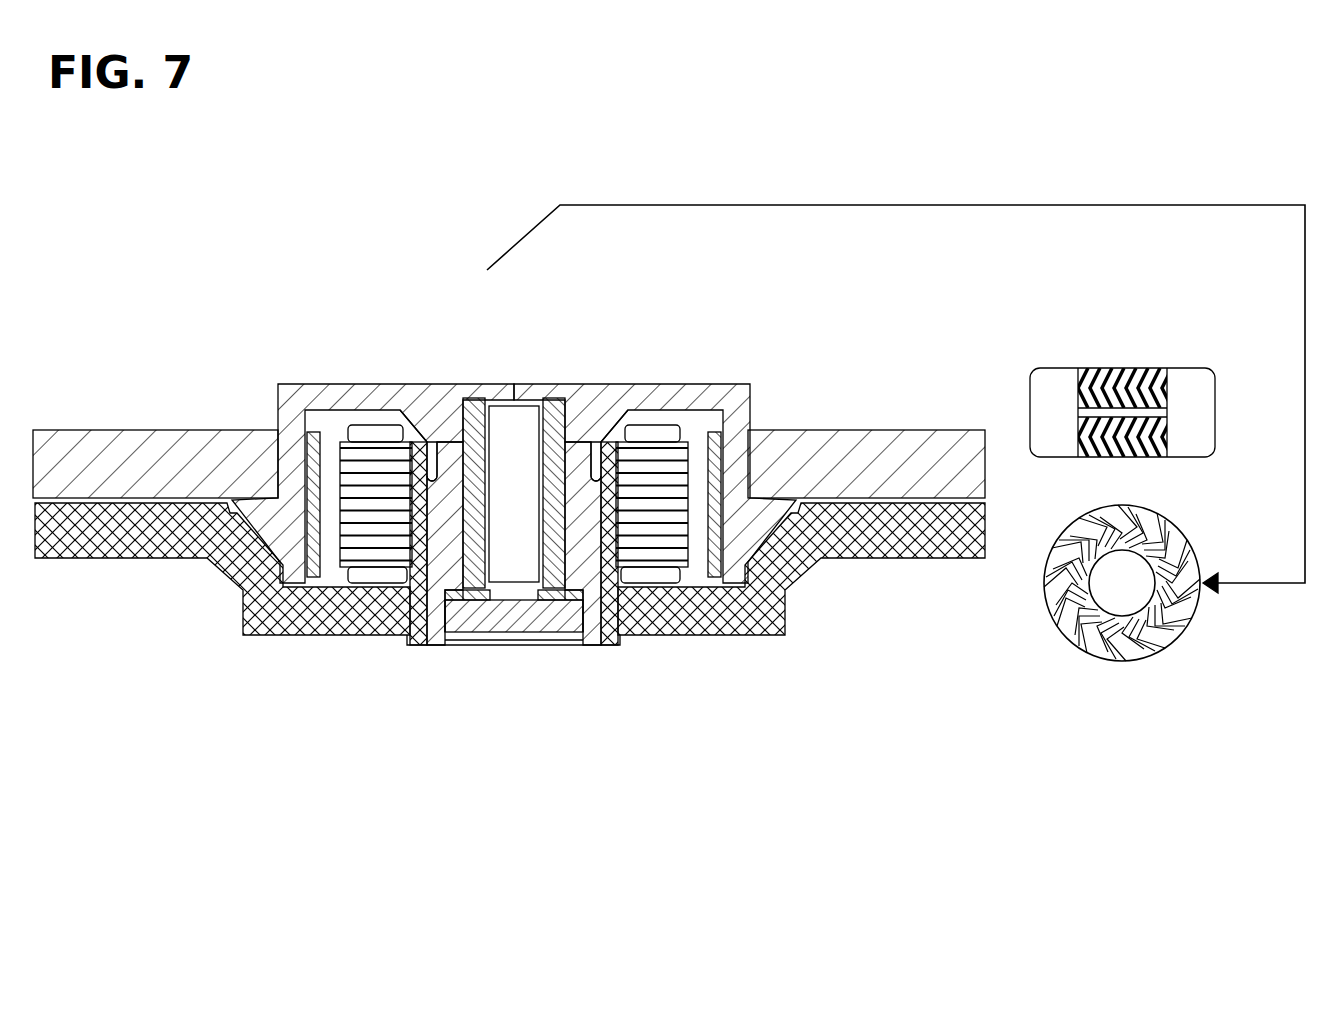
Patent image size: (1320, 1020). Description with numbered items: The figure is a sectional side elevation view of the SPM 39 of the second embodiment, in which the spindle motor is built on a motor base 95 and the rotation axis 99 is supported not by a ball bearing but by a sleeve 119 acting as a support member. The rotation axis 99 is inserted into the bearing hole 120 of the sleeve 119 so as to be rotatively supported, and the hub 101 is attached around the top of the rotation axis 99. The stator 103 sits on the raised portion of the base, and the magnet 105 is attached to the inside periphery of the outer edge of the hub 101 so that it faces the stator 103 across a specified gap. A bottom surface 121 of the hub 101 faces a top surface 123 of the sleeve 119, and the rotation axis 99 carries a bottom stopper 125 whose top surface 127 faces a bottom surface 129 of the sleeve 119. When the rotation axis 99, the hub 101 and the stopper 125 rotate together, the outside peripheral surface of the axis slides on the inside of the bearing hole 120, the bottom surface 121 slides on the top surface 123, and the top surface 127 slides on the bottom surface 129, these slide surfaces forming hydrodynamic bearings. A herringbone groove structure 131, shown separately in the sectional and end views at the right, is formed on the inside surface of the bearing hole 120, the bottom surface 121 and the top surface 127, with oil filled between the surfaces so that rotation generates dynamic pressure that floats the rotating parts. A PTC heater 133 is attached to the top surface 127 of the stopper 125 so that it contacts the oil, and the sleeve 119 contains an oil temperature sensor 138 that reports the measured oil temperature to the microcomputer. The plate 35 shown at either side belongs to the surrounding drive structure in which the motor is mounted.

The plate 35 is at (75, 450).
The SPM 39 is at (365, 205).
The motor base 95 is at (268, 622).
The rotation axis 99 is at (440, 470).
The hub 101 is at (665, 398).
The stator 103 is at (360, 455).
The magnet 105 is at (312, 450).
The sleeve 119 is at (590, 470).
The bearing hole 120 is at (1123, 345).
The bottom surface of the hub 121 is at (458, 440).
The top surface of the sleeve 123 is at (452, 445).
The stopper 125 is at (545, 612).
The top surface of the stopper 127 is at (475, 600).
The bottom surface of the sleeve 129 is at (448, 592).
The herringbone groove structure 131 is at (1138, 368).
The PTC heater 133 is at (460, 605).
The oil temperature sensor 138 is at (437, 600).